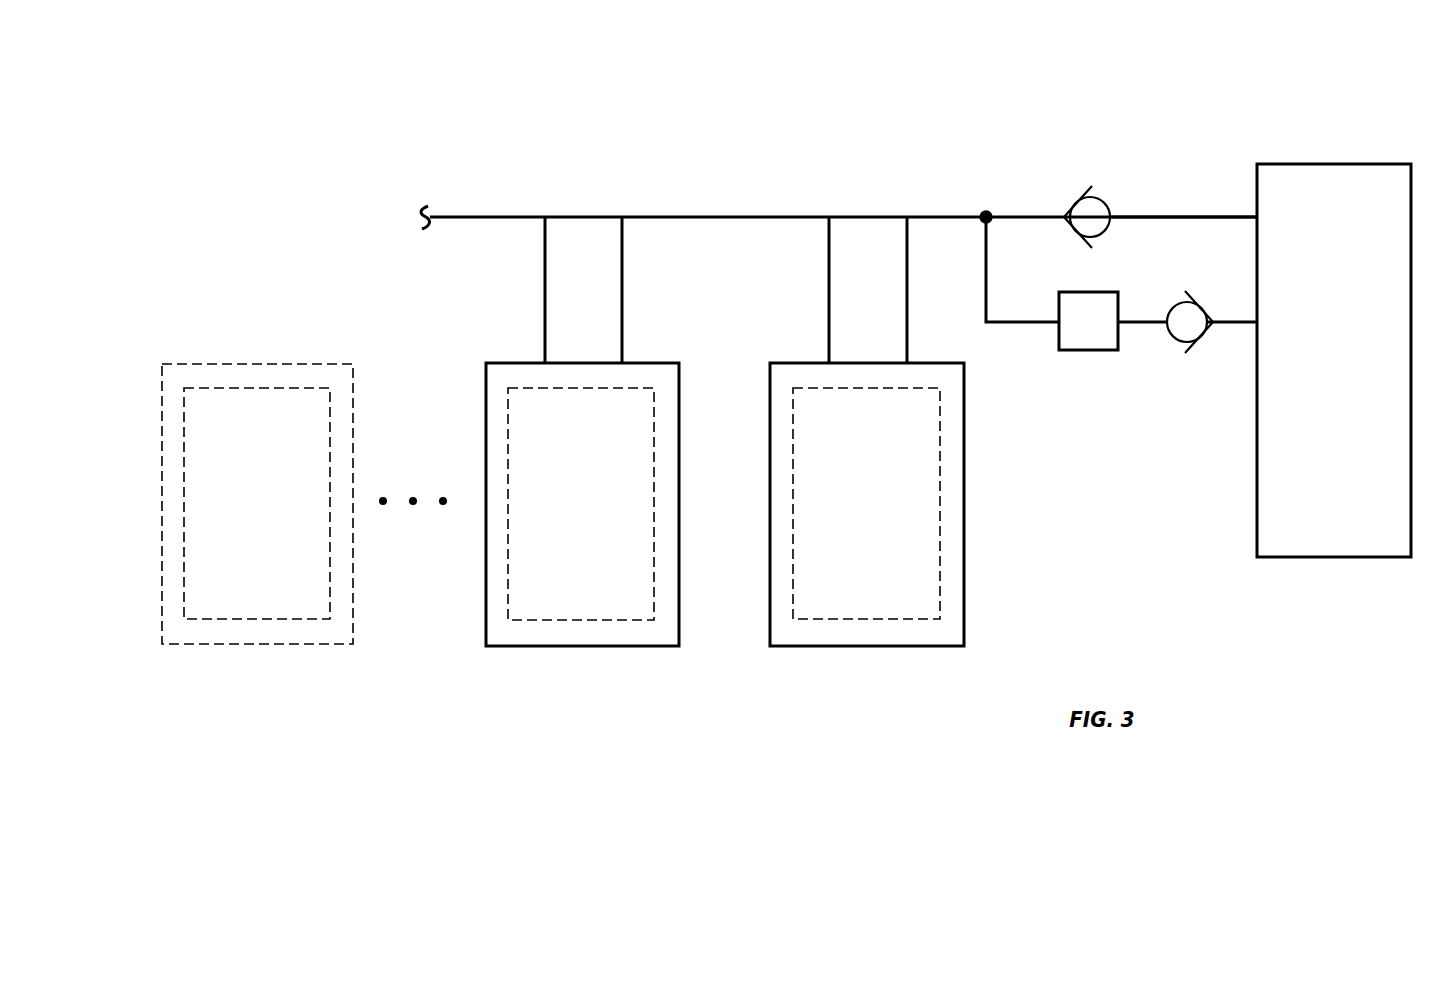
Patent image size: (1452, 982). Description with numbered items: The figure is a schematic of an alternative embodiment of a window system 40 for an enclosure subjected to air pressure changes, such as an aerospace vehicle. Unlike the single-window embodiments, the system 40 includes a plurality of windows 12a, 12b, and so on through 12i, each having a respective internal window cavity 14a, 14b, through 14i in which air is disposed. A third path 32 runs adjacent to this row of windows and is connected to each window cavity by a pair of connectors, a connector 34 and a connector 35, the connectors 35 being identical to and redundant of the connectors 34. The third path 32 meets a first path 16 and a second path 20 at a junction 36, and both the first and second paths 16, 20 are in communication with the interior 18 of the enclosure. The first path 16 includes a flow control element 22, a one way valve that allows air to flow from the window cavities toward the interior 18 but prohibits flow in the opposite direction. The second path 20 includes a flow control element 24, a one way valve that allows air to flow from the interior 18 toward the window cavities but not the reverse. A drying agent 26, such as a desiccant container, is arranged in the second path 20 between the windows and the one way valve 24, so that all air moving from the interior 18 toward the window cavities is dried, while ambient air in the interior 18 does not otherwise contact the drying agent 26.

The window system 40 is at (341, 100).
The third path 32 is at (730, 215).
The connector 34 is at (829, 310).
The connector 35 is at (907, 330).
The junction 36 is at (986, 212).
The flow control element 22 is at (1101, 198).
The first path 16 is at (1205, 215).
The interior of the enclosure 18 is at (1365, 164).
The second path 20 is at (1030, 325).
The drying agent 26 is at (1118, 350).
The flow control element 24 is at (1182, 342).
The window 12i is at (240, 648).
The window cavity 14i is at (266, 578).
The window 12b is at (620, 646).
The window cavity 14b is at (545, 590).
The window 12a is at (900, 646).
The window cavity 14a is at (825, 590).